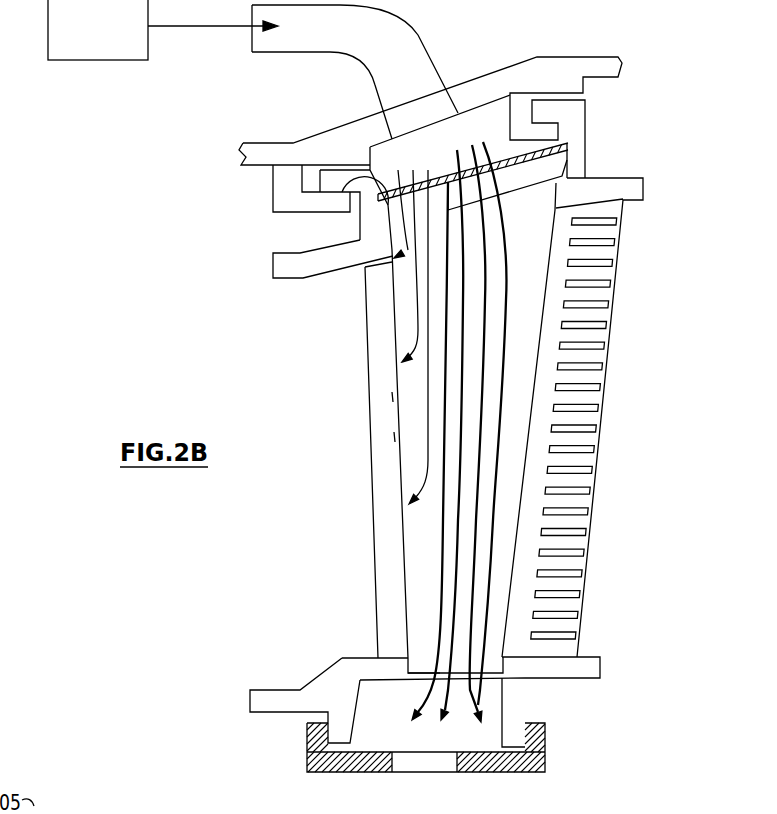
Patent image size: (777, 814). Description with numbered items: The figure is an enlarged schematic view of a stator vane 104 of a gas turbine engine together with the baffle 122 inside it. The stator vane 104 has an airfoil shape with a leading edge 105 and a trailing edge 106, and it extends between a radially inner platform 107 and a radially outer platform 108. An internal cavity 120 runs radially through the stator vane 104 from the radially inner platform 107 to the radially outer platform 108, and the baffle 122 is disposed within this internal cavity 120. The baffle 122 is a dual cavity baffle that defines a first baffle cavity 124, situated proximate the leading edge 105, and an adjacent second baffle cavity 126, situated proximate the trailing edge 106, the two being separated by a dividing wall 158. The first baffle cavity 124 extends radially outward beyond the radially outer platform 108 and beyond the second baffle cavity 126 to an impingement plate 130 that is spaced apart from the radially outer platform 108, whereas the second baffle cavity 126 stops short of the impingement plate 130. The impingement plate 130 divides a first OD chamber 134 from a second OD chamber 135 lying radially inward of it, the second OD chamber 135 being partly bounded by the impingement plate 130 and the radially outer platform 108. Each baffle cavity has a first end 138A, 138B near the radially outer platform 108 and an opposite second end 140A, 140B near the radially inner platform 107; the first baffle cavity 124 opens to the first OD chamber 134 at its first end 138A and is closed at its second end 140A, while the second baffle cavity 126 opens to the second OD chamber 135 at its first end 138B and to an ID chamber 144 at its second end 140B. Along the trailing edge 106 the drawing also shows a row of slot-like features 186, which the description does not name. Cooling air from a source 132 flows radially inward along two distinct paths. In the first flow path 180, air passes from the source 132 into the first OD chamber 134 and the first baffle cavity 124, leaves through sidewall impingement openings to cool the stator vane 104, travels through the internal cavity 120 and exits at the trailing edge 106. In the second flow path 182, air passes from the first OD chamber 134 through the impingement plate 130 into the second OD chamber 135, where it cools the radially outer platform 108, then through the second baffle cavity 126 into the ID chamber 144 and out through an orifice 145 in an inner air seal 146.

The source 132 is at (70, 60).
The first outer diameter chamber 134 is at (477, 125).
The second outer diameter chamber 135 is at (523, 175).
The impingement plate 130 is at (557, 143).
The first end of first baffle cavity 138A is at (350, 192).
The first end of second baffle cavity 138B is at (510, 168).
The radially outer platform 108 is at (333, 262).
The stator vane 104 is at (380, 482).
The leading edge 105 is at (369, 566).
The first baffle cavity 124 is at (400, 317).
The internal cavity 120 is at (388, 399).
The baffle 122 is at (390, 439).
The first flow path 180 is at (428, 397).
The second flow path 182 is at (530, 207).
The second baffle cavity 126 is at (517, 417).
The trailing edge 106 is at (618, 337).
The cooling slots 186 is at (590, 537).
The dividing wall 158 is at (440, 583).
The radially inner platform 107 is at (367, 665).
The second end of first baffle cavity 140A is at (423, 675).
The second end of second baffle cavity 140B is at (490, 678).
The inner diameter chamber 144 is at (365, 725).
The inner air seal 146 is at (347, 762).
The orifice 145 is at (402, 764).